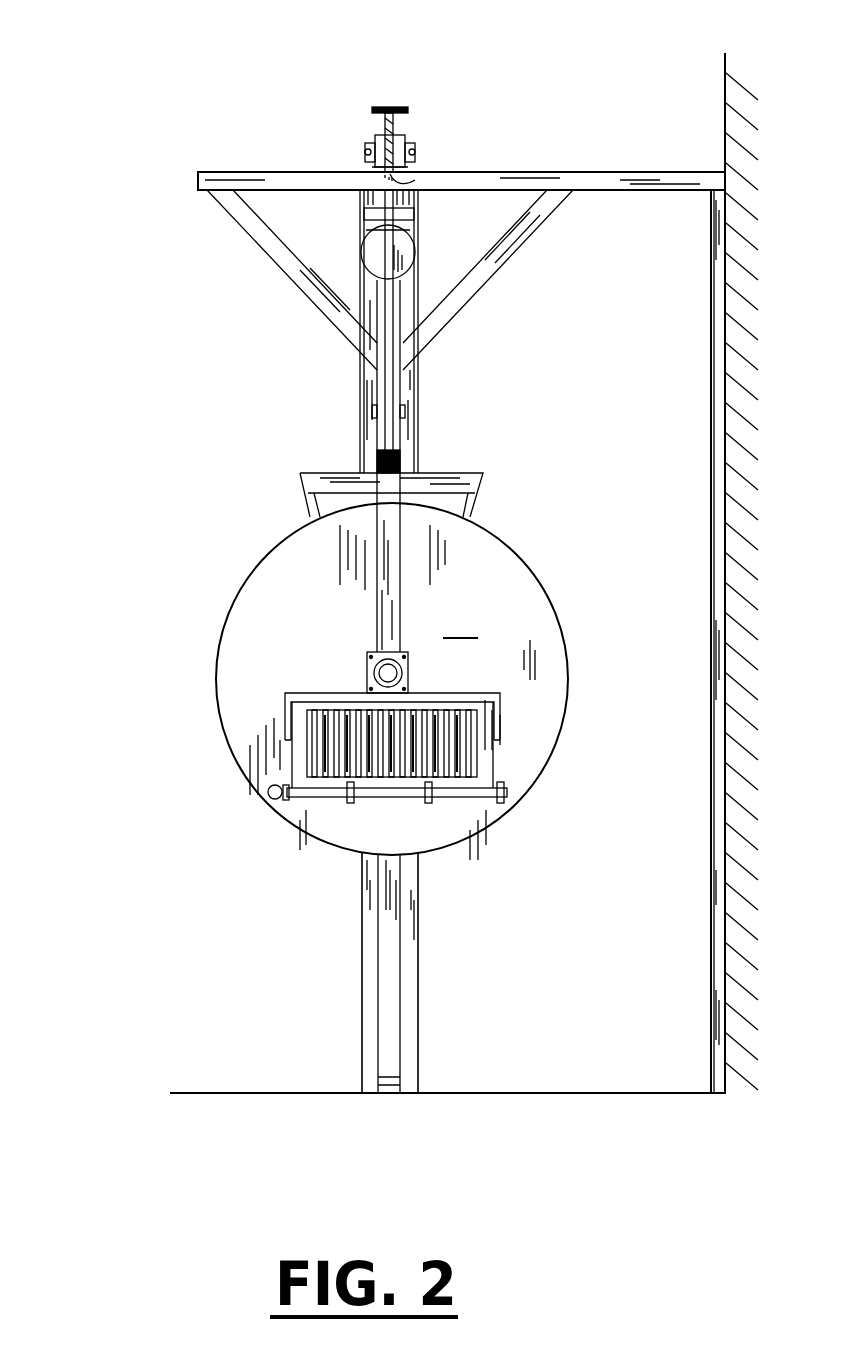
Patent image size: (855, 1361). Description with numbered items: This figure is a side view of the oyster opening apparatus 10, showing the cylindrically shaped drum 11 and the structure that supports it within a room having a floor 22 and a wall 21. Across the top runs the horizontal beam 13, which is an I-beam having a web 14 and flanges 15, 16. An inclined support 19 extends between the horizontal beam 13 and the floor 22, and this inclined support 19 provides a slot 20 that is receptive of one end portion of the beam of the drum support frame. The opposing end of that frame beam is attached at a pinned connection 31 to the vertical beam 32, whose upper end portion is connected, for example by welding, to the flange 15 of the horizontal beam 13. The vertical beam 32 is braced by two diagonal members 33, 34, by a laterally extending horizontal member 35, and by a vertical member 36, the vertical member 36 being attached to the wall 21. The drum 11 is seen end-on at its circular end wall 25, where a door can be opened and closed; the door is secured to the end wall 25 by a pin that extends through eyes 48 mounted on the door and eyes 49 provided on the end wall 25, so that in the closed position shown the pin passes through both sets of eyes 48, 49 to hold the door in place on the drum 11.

The oyster opening apparatus 10 is at (115, 158).
The drum 11 is at (215, 685).
The horizontal beam 13 is at (375, 107).
The web 14 is at (385, 127).
The flange 15 is at (410, 178).
The flange 16 is at (405, 107).
The inclined support 19 is at (360, 938).
The slot 20 is at (392, 980).
The wall 21 is at (725, 103).
The floor 22 is at (285, 1093).
The end wall 25 is at (463, 623).
The pinned connection 31 is at (407, 410).
The vertical beam 32 is at (360, 367).
The diagonal member 33 is at (268, 248).
The diagonal member 34 is at (522, 248).
The horizontal member 35 is at (247, 172).
The vertical member 36 is at (710, 372).
The eyes 48 is at (388, 803).
The eyes 49 is at (275, 805).